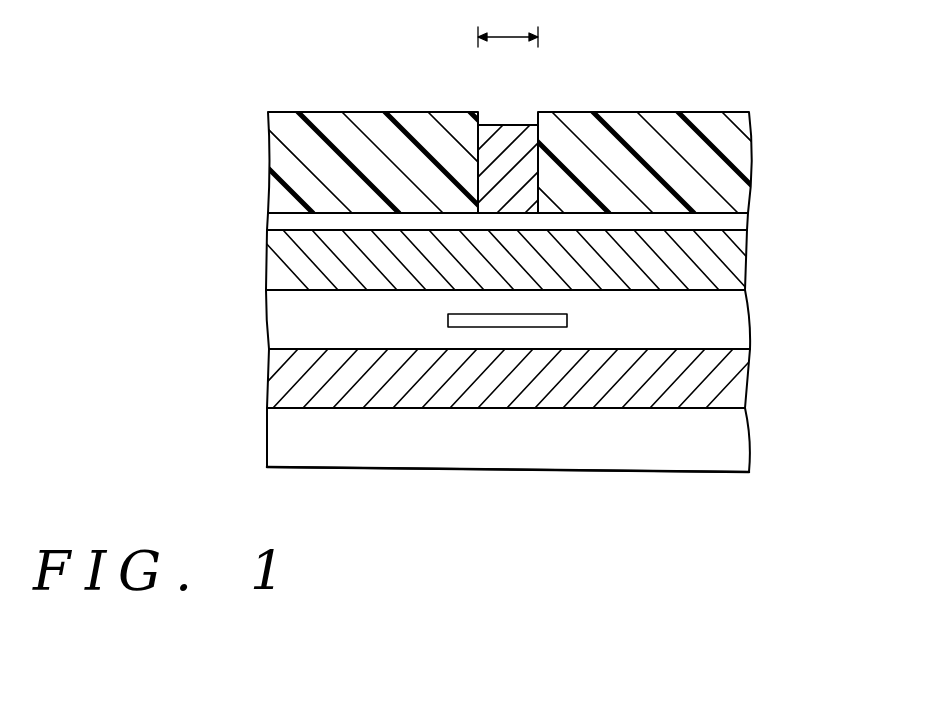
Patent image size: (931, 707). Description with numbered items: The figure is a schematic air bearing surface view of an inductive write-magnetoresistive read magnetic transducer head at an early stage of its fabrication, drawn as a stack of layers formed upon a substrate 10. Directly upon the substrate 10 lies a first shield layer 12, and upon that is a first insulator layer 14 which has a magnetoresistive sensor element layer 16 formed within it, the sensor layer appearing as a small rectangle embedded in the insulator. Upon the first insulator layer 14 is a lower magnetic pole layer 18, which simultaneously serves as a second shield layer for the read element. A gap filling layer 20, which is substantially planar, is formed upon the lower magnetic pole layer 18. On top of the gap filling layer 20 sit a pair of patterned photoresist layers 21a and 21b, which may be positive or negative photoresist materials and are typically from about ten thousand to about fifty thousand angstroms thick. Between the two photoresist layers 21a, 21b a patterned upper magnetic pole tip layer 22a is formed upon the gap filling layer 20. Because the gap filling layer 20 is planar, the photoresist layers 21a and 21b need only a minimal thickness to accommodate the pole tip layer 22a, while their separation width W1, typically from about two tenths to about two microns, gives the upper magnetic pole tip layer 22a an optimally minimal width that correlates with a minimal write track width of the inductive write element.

The substrate 10 is at (279, 439).
The first shield layer 12 is at (278, 378).
The first insulator layer 14 is at (280, 320).
The magnetoresistive (MR) sensor element layer 16 is at (560, 322).
The lower magnetic pole layer 18 is at (275, 263).
The gap filling layer 20 is at (280, 216).
The patterned photoresist layer 21a is at (281, 176).
The patterned photoresist layer 21b is at (748, 181).
The patterned upper magnetic pole tip layer 22a is at (508, 134).
The separation width W1 is at (508, 27).